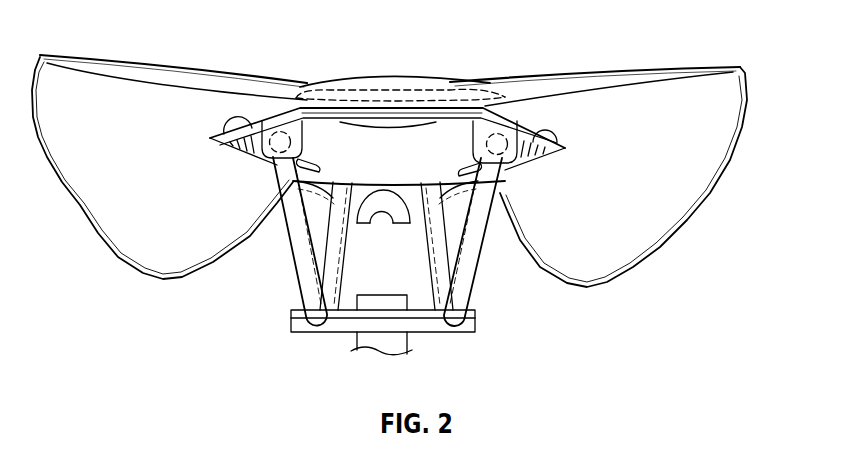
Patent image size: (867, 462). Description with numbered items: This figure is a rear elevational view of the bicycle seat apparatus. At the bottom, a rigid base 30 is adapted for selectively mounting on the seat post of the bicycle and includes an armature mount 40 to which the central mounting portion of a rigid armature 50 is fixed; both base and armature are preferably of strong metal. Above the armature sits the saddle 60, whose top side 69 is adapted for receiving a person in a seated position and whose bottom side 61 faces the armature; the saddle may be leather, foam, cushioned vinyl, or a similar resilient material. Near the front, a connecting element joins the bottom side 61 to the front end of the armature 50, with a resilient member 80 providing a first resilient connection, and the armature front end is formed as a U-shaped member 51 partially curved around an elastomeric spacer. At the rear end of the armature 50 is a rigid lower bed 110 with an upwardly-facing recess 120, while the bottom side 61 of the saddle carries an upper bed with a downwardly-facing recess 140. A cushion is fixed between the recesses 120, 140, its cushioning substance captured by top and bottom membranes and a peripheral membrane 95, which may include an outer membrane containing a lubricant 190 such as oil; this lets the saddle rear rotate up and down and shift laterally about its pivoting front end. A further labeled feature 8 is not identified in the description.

The hinge pin boss 8 is at (550, 128).
The rigid base 30 is at (475, 326).
The armature mount 40 is at (264, 316).
The rigid armature 50 is at (460, 281).
The U-shaped member 51 is at (408, 223).
The saddle 60 is at (690, 82).
The bottom side 61 is at (633, 249).
The top side 69 is at (632, 72).
The resilient member 80 is at (380, 223).
The peripheral membrane 95 is at (507, 100).
The rigid lower bed 110 is at (280, 113).
The upwardly-facing recess 120 is at (388, 129).
The downwardly-facing recess 140 is at (390, 80).
The lubricant 190 is at (417, 93).